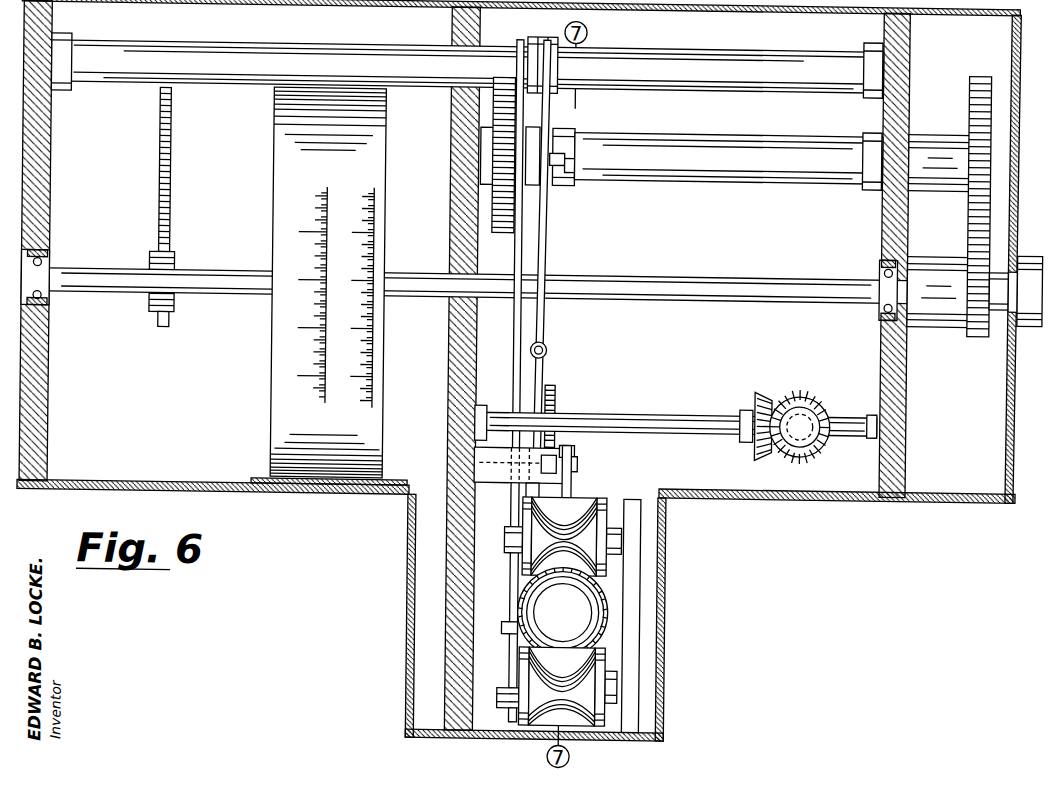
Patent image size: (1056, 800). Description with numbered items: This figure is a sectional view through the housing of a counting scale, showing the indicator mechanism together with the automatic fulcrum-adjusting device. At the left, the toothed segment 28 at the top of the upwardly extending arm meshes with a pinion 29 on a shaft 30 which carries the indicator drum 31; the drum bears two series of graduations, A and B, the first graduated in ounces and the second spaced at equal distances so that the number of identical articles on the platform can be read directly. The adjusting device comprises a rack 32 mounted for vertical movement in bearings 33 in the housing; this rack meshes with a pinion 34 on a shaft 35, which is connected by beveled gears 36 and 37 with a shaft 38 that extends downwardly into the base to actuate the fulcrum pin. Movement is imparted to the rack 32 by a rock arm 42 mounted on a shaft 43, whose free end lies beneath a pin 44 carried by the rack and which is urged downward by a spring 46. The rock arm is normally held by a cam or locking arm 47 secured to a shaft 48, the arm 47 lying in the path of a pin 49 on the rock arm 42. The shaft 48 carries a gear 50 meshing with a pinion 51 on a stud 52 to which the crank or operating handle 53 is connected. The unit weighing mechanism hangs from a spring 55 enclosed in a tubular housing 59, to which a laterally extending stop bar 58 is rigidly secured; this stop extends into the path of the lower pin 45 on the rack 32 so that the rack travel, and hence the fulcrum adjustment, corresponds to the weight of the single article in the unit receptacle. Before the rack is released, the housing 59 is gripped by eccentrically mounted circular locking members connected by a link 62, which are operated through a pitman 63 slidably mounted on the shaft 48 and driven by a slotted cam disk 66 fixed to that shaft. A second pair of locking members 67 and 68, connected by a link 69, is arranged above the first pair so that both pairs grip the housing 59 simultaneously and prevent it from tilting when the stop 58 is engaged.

The toothed segment 28 is at (169, 149).
The pinion 29 is at (176, 257).
The shaft 30 is at (236, 276).
The indicator drum 31 is at (280, 191).
The rack 32 is at (577, 451).
The bearings 33 is at (506, 500).
The pinion 34 is at (556, 387).
The shaft 35 is at (659, 422).
The beveled gear 36 is at (759, 396).
The beveled gear 37 is at (803, 398).
The shaft 38 is at (822, 400).
The rock arm 42 is at (545, 321).
The shaft 43 is at (632, 60).
The pin 44 is at (520, 466).
The lower pin 45 is at (579, 467).
The spring 46 is at (547, 350).
The locking arm 47 is at (555, 145).
The shaft 48 is at (703, 172).
The pin 49 is at (574, 164).
The gear 50 is at (970, 219).
The pinion 51 is at (977, 330).
The stud 52 is at (1003, 313).
The operating handle 53 is at (1027, 322).
The spring 55 is at (595, 612).
The stop bar 58 is at (577, 492).
The tubular housing 59 is at (603, 640).
The link 62 is at (511, 602).
The pitman 63 is at (514, 350).
The cam disk 66 is at (513, 221).
The locking member 67 is at (600, 571).
The locking member 68 is at (600, 667).
The link 69 is at (512, 628).